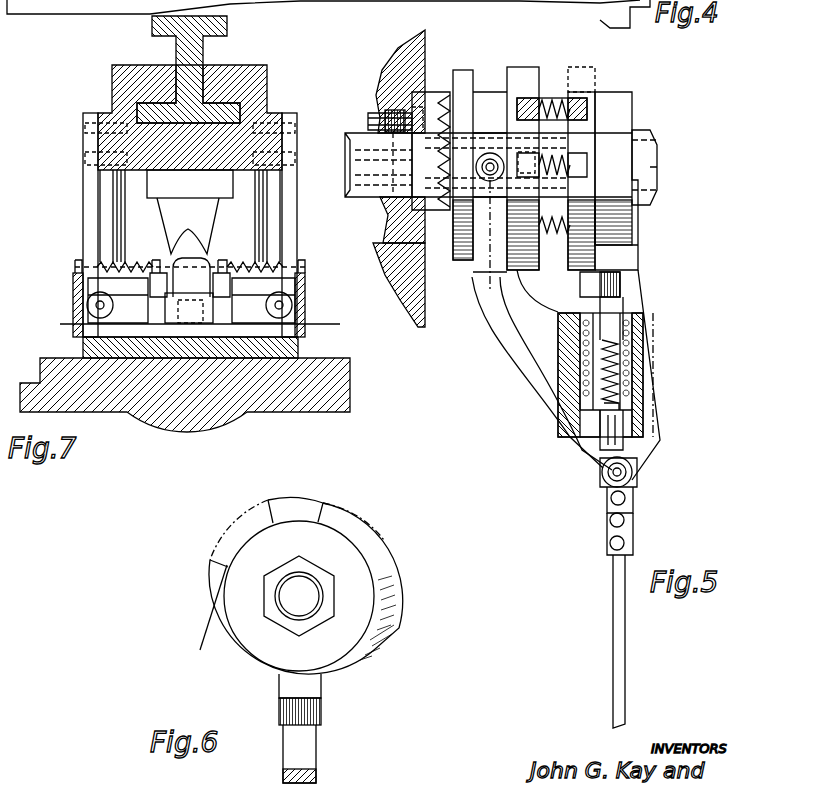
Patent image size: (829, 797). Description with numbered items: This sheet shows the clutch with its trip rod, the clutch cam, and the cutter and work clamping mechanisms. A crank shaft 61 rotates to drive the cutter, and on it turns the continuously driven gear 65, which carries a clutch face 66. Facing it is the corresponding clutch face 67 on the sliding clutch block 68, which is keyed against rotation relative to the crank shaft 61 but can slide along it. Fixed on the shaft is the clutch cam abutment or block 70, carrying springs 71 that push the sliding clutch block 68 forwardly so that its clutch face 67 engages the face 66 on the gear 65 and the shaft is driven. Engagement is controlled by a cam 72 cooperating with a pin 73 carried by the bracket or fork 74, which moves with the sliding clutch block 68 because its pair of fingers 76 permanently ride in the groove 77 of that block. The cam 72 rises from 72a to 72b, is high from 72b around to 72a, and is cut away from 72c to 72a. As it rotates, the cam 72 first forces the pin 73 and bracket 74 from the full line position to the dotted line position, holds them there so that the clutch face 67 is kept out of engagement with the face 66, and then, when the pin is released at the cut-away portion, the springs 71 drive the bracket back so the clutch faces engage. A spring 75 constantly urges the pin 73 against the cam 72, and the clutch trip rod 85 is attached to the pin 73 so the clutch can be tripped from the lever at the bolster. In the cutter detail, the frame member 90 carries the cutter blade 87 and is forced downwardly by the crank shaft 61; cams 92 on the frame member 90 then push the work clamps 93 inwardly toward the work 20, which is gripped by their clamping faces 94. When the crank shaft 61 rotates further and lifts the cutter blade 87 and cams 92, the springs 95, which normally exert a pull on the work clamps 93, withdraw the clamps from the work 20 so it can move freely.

In FIG. 7, the work 20 is at (189, 300).
In FIG. 5, the crank shaft 61 is at (367, 200).
In FIG. 5, the gear 65 is at (412, 268).
In FIG. 5, the clutch face 66 is at (428, 98).
In FIG. 5, the clutch face 67 is at (447, 88).
In FIG. 5, the sliding clutch block 68 is at (517, 80).
In FIG. 5, the clutch cam abutment block 70 is at (598, 105).
In FIG. 5, the springs 71 is at (550, 98).
In FIG. 5, the cam 72 is at (575, 258).
In FIG. 6, the cam 72 is at (307, 532).
In FIG. 6, the cam point 72a is at (368, 560).
In FIG. 6, the cam point 72b is at (376, 648).
In FIG. 6, the cam point 72c is at (196, 615).
In FIG. 5, the pin 73 is at (613, 303).
In FIG. 6, the pin 73 is at (307, 748).
In FIG. 5, the bracket or fork 74 is at (522, 338).
In FIG. 5, the spring 75 is at (650, 388).
In FIG. 5, the fingers 76 is at (490, 152).
In FIG. 5, the groove 77 is at (492, 80).
In FIG. 5, the clutch trip rod 85 is at (621, 714).
In FIG. 7, the cutter blade 87 is at (213, 206).
In FIG. 7, the frame member 90 is at (260, 92).
In FIG. 7, the cams 92 is at (90, 197).
In FIG. 7, the work clamps 93 is at (191, 305).
In FIG. 7, the clamping faces 94 is at (191, 275).
In FIG. 7, the springs 95 is at (131, 262).